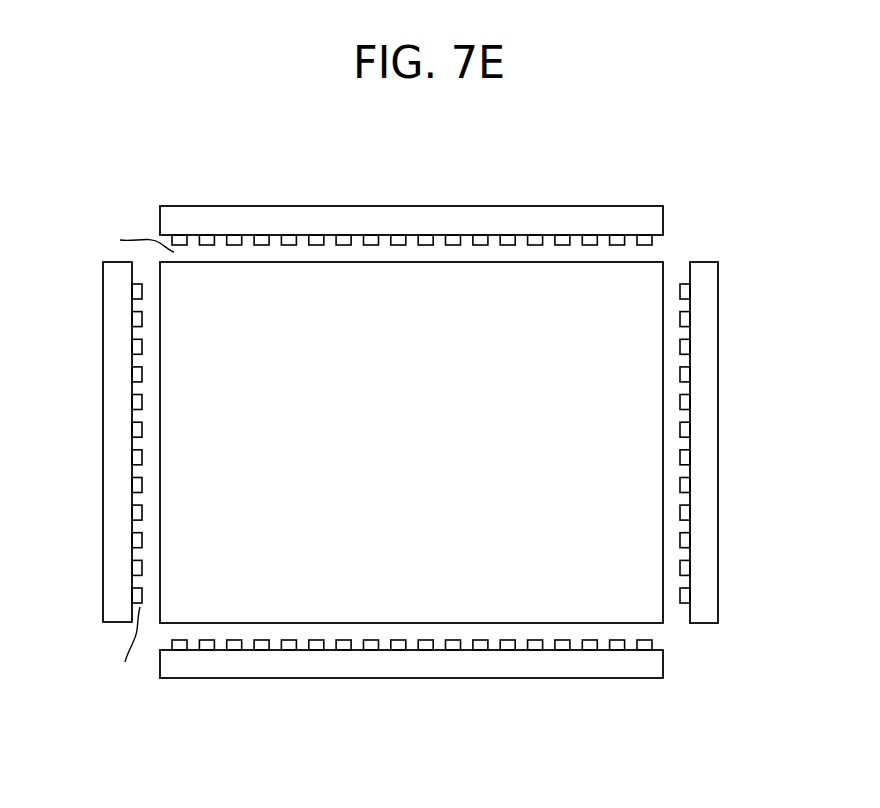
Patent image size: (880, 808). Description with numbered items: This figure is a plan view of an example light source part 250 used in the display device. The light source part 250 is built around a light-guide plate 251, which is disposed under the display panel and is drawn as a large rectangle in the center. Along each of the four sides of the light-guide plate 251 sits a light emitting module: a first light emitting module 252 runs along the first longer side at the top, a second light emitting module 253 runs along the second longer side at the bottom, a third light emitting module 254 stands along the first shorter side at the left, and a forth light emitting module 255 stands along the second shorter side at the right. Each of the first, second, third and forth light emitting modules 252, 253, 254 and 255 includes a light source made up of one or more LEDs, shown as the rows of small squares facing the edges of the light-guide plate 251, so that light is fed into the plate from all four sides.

The light source part 250 is at (429, 159).
The light-guide plate 251 is at (655, 262).
The first light emitting module 252 is at (663, 221).
The second light emitting module 253 is at (663, 660).
The third light emitting module 254 is at (103, 440).
The forth light emitting module 255 is at (718, 440).